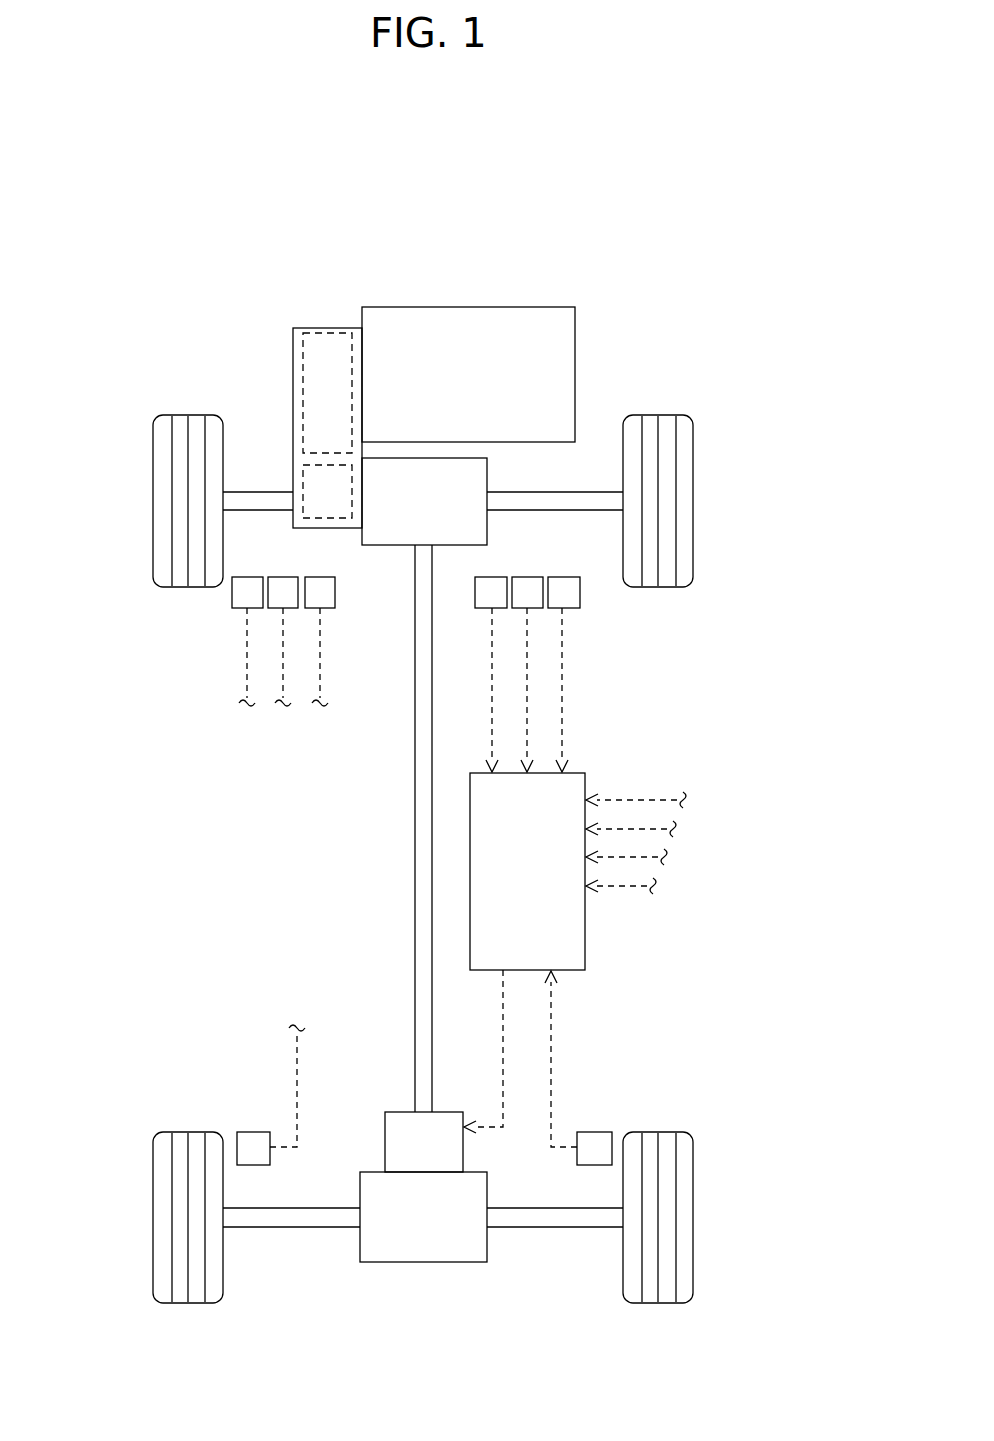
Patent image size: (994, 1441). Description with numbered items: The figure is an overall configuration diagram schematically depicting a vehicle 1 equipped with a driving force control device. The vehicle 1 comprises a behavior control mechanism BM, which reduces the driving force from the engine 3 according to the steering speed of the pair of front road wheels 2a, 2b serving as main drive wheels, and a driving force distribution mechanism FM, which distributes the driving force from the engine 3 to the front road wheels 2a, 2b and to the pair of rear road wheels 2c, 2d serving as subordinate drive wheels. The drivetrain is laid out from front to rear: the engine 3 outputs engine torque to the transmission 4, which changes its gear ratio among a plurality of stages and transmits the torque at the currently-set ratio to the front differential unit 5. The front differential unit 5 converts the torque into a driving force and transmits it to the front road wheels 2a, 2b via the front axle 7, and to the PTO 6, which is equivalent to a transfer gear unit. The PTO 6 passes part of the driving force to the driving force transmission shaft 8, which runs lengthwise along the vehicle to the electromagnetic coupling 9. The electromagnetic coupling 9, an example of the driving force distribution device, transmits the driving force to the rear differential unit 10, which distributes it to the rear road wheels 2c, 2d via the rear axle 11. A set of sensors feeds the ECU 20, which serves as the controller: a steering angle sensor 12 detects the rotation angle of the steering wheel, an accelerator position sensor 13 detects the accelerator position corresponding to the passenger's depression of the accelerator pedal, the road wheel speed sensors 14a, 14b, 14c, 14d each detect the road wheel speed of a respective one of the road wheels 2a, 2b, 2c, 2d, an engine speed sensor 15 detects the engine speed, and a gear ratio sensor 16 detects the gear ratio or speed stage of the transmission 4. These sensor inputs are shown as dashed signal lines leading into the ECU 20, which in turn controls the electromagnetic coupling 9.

The vehicle 1 is at (643, 205).
The front road wheel 2a is at (184, 588).
The front road wheel 2b is at (650, 588).
The rear road wheel 2c is at (194, 1304).
The rear road wheel 2d is at (662, 1304).
The engine 3 is at (470, 307).
The transmission 4 is at (297, 392).
The front differential unit 5 is at (293, 480).
The PTO 6 is at (488, 473).
The front axle 7 is at (578, 490).
The driving force transmission shaft 8 is at (413, 793).
The electromagnetic coupling 9 is at (397, 1112).
The rear differential unit 10 is at (429, 1263).
The rear axle 11 is at (547, 1228).
The steering angle sensor 12 is at (279, 577).
The accelerator position sensor 13 is at (316, 577).
The road wheel speed sensor 14a is at (243, 609).
The road wheel speed sensor 14b is at (557, 575).
The road wheel speed sensor 14c is at (255, 1130).
The road wheel speed sensor 14d is at (592, 1130).
The engine speed sensor 15 is at (485, 575).
The gear ratio sensor 16 is at (520, 575).
The ECU 20 is at (582, 764).
The behavior control mechanism BM is at (387, 230).
The driving force distribution mechanism FM is at (352, 972).